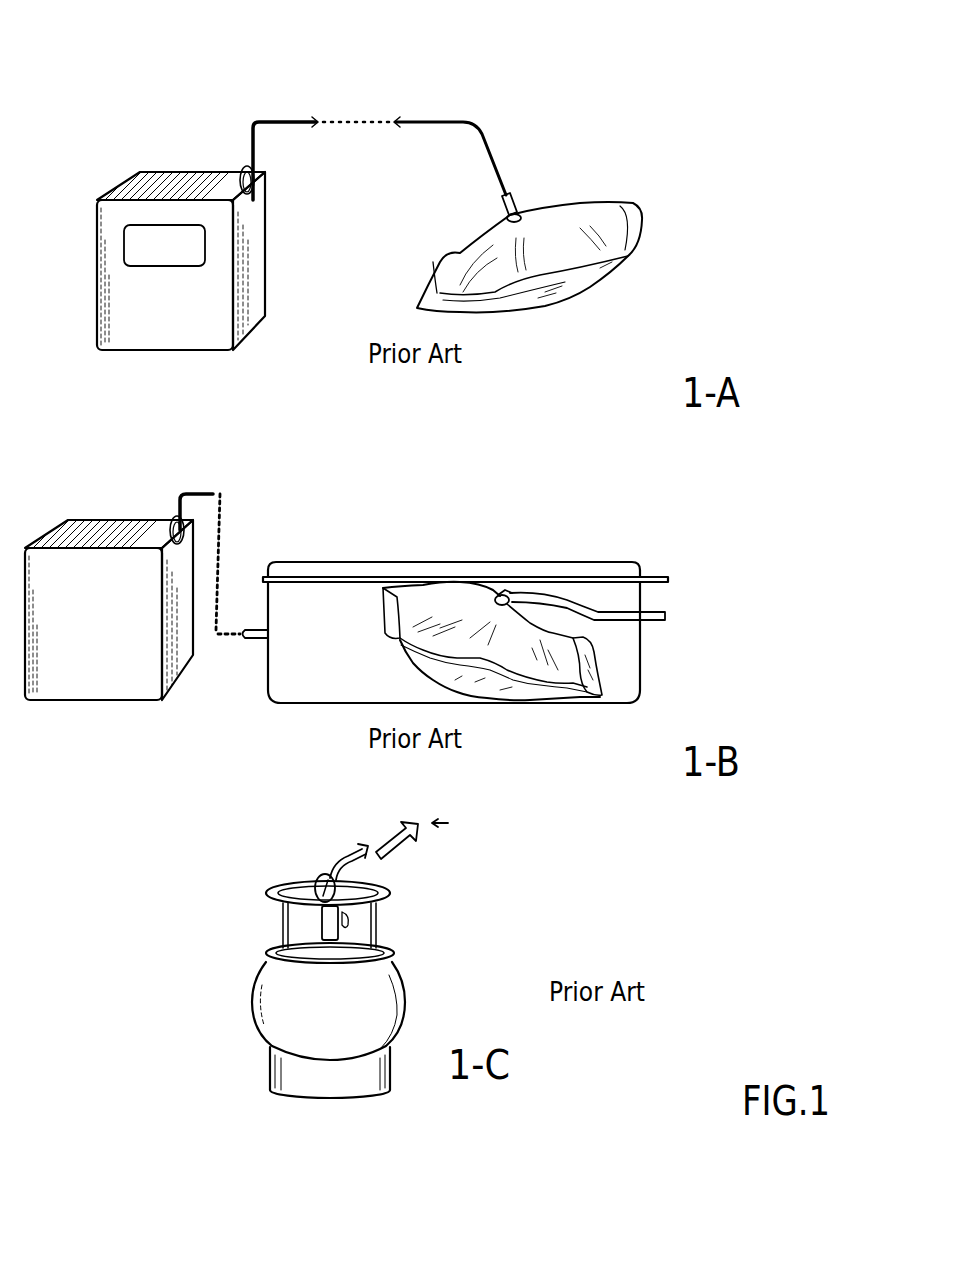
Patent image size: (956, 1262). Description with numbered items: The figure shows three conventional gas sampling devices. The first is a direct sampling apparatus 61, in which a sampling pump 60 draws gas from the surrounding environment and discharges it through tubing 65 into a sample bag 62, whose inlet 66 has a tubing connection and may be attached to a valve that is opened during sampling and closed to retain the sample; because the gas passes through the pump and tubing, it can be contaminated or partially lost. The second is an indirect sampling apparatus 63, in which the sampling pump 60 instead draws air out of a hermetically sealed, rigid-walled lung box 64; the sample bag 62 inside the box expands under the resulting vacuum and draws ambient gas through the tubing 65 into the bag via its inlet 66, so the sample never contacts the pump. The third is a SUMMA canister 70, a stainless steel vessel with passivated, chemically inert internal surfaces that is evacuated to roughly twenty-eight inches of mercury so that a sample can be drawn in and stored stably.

The sampling pump 60 is at (160, 338).
The direct sampling apparatus 61 is at (433, 52).
The sample bag 62 is at (477, 248).
The indirect sampling apparatus 63 is at (620, 490).
The hermetically sealed box 64 is at (612, 570).
The tubing 65 is at (480, 127).
The inlet 66 is at (522, 204).
The SUMMA canister 70 is at (403, 973).